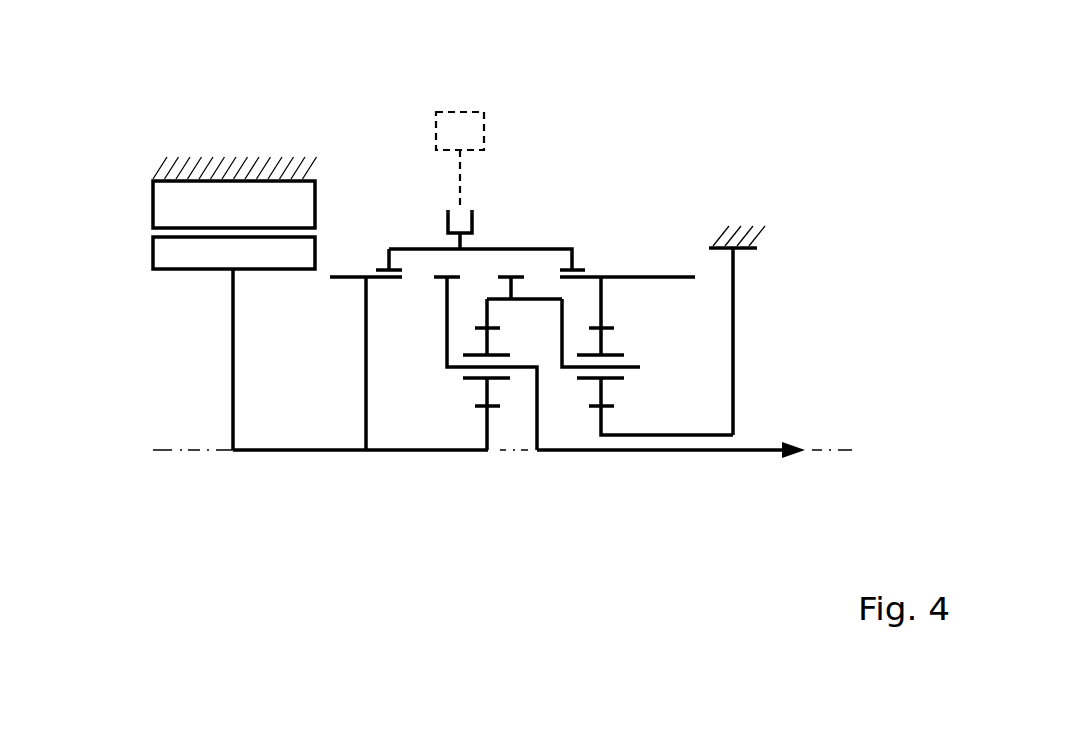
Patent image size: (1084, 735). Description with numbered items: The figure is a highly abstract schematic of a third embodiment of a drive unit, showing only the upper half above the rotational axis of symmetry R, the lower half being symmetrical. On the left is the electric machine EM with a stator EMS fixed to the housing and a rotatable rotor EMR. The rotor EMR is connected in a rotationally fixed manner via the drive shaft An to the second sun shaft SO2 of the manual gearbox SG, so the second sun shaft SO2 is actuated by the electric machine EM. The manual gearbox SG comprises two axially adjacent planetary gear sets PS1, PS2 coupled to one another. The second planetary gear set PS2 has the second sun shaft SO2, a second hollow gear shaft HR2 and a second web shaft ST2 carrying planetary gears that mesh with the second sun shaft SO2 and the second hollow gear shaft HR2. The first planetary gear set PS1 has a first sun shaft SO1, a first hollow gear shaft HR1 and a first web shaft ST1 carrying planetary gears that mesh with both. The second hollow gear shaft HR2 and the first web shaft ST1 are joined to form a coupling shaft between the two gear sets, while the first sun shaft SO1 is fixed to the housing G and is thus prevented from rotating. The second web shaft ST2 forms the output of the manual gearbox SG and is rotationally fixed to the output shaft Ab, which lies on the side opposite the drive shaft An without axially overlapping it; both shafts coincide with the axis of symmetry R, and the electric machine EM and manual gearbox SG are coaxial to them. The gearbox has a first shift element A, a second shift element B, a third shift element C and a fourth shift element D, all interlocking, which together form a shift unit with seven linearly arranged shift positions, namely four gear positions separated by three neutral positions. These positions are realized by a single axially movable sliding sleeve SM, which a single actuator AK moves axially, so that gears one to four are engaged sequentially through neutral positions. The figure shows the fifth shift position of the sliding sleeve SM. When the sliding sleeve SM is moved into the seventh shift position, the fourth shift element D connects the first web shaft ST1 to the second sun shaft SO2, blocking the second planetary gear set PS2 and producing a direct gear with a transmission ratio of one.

The electric machine EM is at (182, 269).
The stator EMS is at (168, 205).
The rotor EMR is at (168, 250).
The drive shaft An is at (288, 452).
The output shaft Ab is at (725, 452).
The fourth shift element D is at (351, 260).
The third shift element C is at (385, 226).
The second shift element B is at (442, 261).
The first shift element A is at (525, 258).
The actuator AK is at (481, 93).
The sliding sleeve SM is at (488, 208).
The manual gearbox SG is at (666, 133).
The housing G is at (738, 200).
The first planetary gear set PS1 is at (751, 415).
The second planetary gear set PS2 is at (416, 457).
The first hollow gear shaft HR1 is at (601, 308).
The first web shaft ST1 is at (630, 366).
The first sun shaft SO1 is at (602, 418).
The second hollow gear shaft HR2 is at (487, 312).
The second web shaft ST2 is at (457, 370).
The second sun shaft SO2 is at (487, 422).
The rotational axis of symmetry R is at (835, 451).